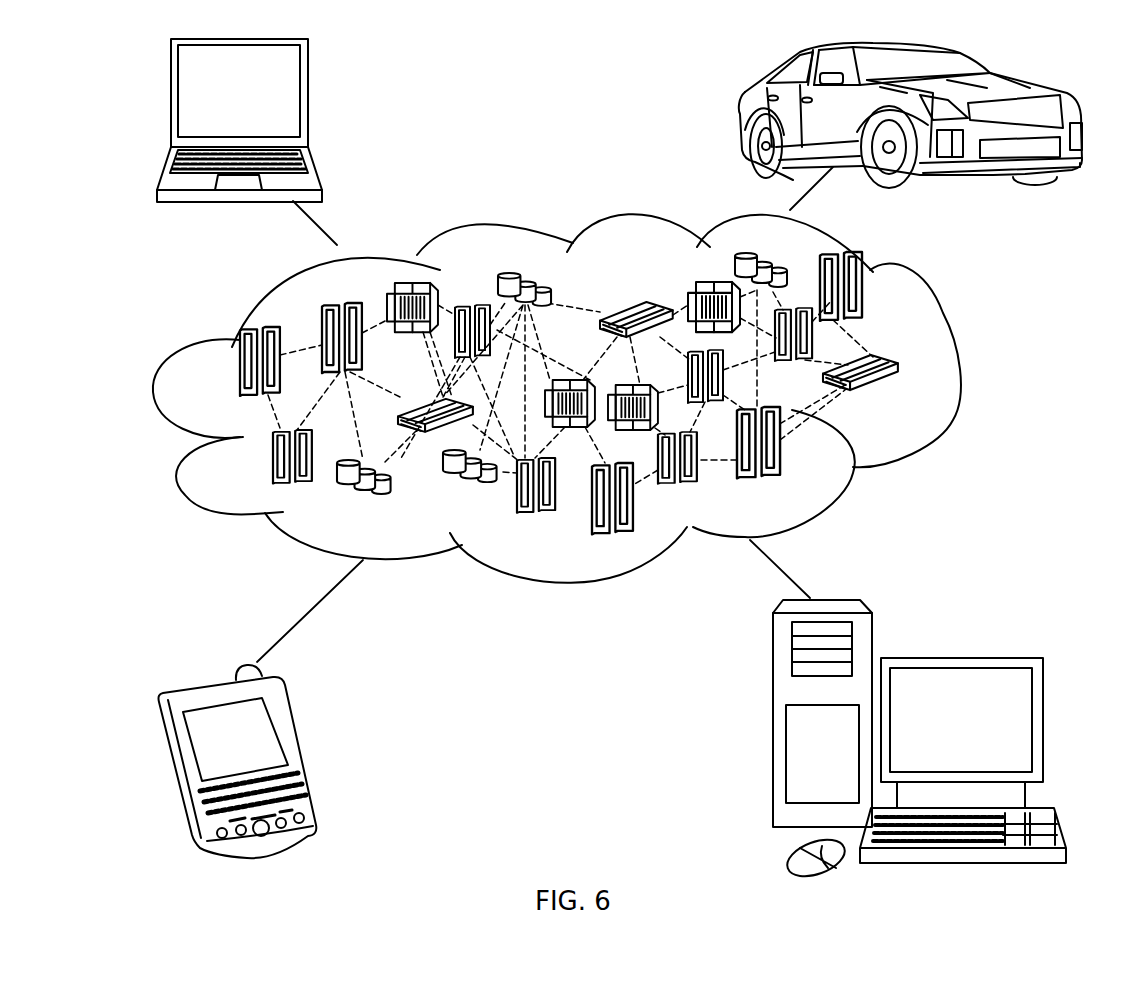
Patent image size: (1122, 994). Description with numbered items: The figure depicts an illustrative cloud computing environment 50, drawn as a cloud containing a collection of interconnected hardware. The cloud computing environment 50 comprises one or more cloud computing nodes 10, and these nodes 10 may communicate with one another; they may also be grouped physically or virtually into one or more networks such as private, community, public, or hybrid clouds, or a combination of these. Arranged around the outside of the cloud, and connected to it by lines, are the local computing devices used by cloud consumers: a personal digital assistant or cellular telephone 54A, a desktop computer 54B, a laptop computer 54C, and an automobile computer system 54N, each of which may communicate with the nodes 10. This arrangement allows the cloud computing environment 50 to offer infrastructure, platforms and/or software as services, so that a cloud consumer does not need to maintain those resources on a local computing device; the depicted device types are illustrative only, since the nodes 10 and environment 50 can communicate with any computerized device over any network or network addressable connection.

The cloud computing node 10 is at (898, 400).
The cloud computing environment 50 is at (958, 371).
The personal digital assistant (PDA) or cellular telephone 54A is at (297, 750).
The desktop computer 54B is at (958, 657).
The laptop computer 54C is at (308, 98).
The automobile computer system 54N is at (740, 115).